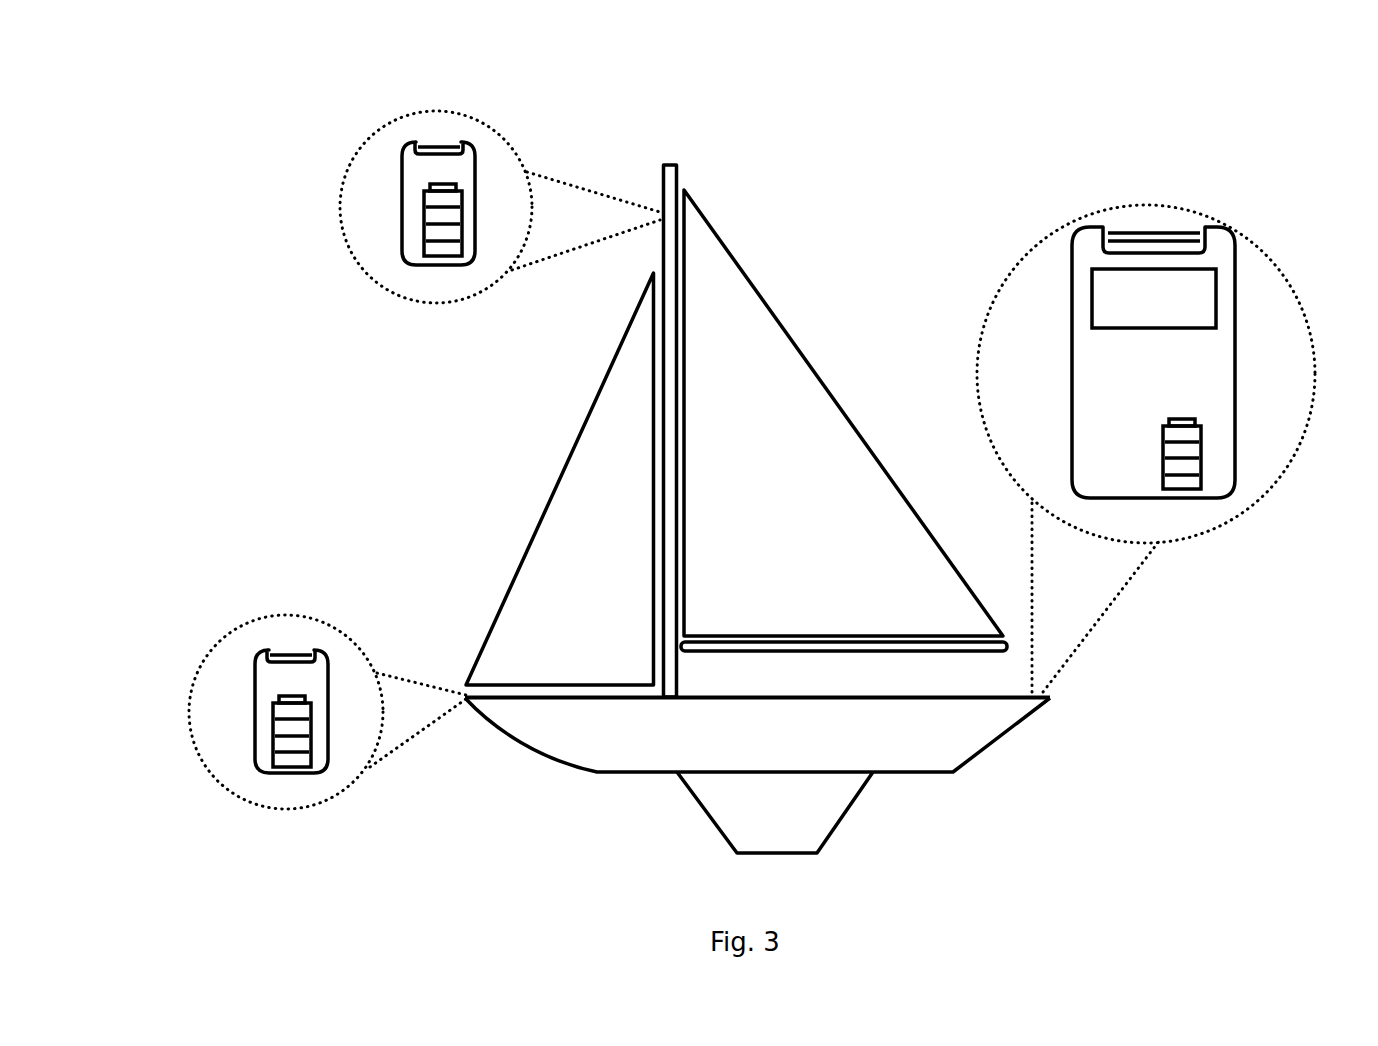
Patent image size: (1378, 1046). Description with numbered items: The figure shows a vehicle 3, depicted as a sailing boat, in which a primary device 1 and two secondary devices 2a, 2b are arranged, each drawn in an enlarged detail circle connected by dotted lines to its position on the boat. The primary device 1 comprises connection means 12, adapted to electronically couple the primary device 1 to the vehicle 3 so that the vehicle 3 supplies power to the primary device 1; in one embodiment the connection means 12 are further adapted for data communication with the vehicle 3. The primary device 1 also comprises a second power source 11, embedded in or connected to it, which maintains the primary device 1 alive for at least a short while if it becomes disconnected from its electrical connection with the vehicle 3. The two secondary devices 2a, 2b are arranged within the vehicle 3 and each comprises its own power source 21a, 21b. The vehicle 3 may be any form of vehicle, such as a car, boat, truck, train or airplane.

The primary device 1 is at (1082, 228).
The second power source 11 is at (1202, 467).
The connection means 12 is at (1218, 292).
The secondary device 2a is at (408, 142).
The power source 21a is at (423, 247).
The secondary device 2b is at (262, 650).
The power source 21b is at (273, 758).
The vehicle 3 is at (938, 772).